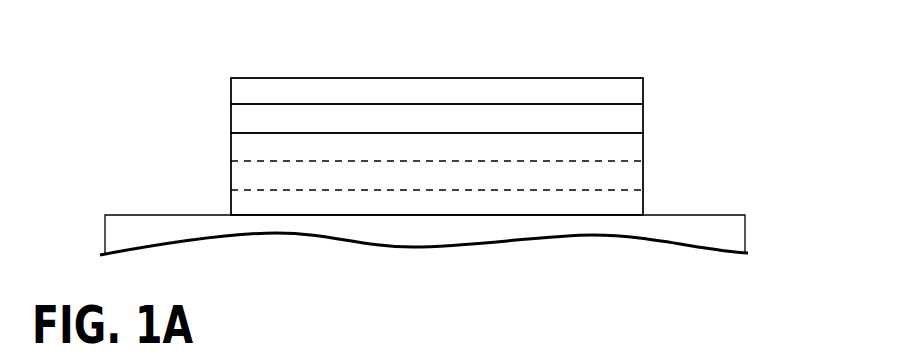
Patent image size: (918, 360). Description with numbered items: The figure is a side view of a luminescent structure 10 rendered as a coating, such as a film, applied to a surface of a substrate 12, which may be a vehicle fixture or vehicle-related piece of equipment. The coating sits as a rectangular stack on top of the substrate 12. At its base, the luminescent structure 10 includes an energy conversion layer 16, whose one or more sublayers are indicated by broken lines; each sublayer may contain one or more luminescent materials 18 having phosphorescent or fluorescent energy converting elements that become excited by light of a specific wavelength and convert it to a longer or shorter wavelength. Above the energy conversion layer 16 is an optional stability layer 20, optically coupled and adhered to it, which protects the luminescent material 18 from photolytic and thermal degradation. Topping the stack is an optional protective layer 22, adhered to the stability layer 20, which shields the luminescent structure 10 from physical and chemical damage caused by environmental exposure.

The luminescent structure 10 is at (577, 53).
The substrate 12 is at (688, 215).
The energy conversion layer 16 is at (231, 172).
The luminescent material 18 is at (595, 178).
The stability layer 20 is at (231, 118).
The protective layer 22 is at (322, 78).